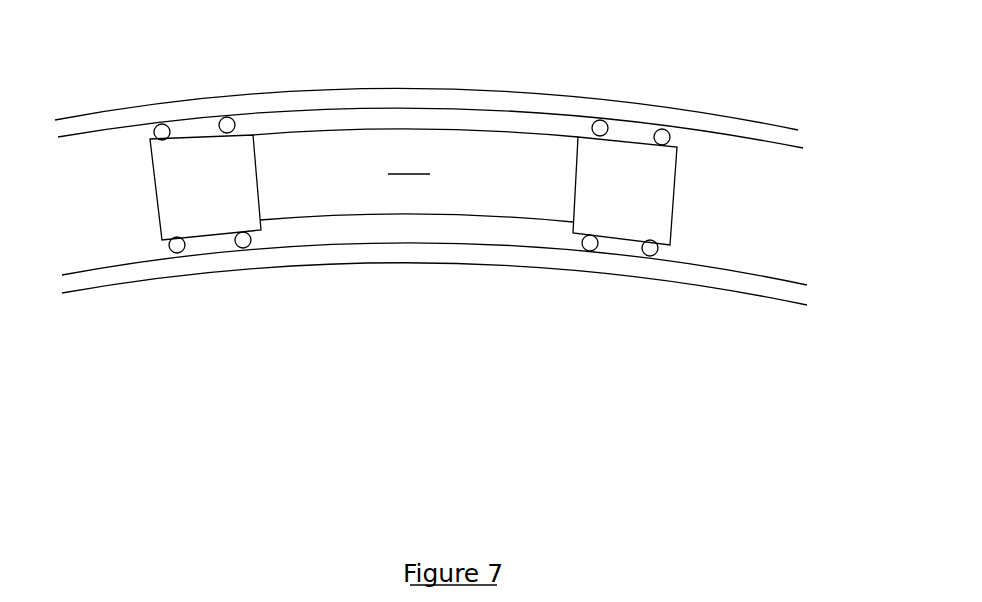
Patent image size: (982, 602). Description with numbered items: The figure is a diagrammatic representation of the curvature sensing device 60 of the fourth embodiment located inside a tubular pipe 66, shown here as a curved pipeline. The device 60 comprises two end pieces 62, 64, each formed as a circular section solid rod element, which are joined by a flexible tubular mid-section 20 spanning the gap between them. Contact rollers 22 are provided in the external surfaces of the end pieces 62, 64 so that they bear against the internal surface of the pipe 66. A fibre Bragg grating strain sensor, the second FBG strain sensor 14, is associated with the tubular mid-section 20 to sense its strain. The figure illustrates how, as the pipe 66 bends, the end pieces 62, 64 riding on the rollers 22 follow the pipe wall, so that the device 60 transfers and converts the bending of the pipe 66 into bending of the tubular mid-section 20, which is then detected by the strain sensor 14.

The second FBG strain sensor 14 is at (410, 164).
The tubular mid-section 20 is at (512, 190).
The contact rollers 22 is at (227, 125).
The curvature sensing device 60 is at (338, 236).
The end piece 62 is at (200, 208).
The end piece 64 is at (617, 218).
The pipe 66 is at (748, 126).